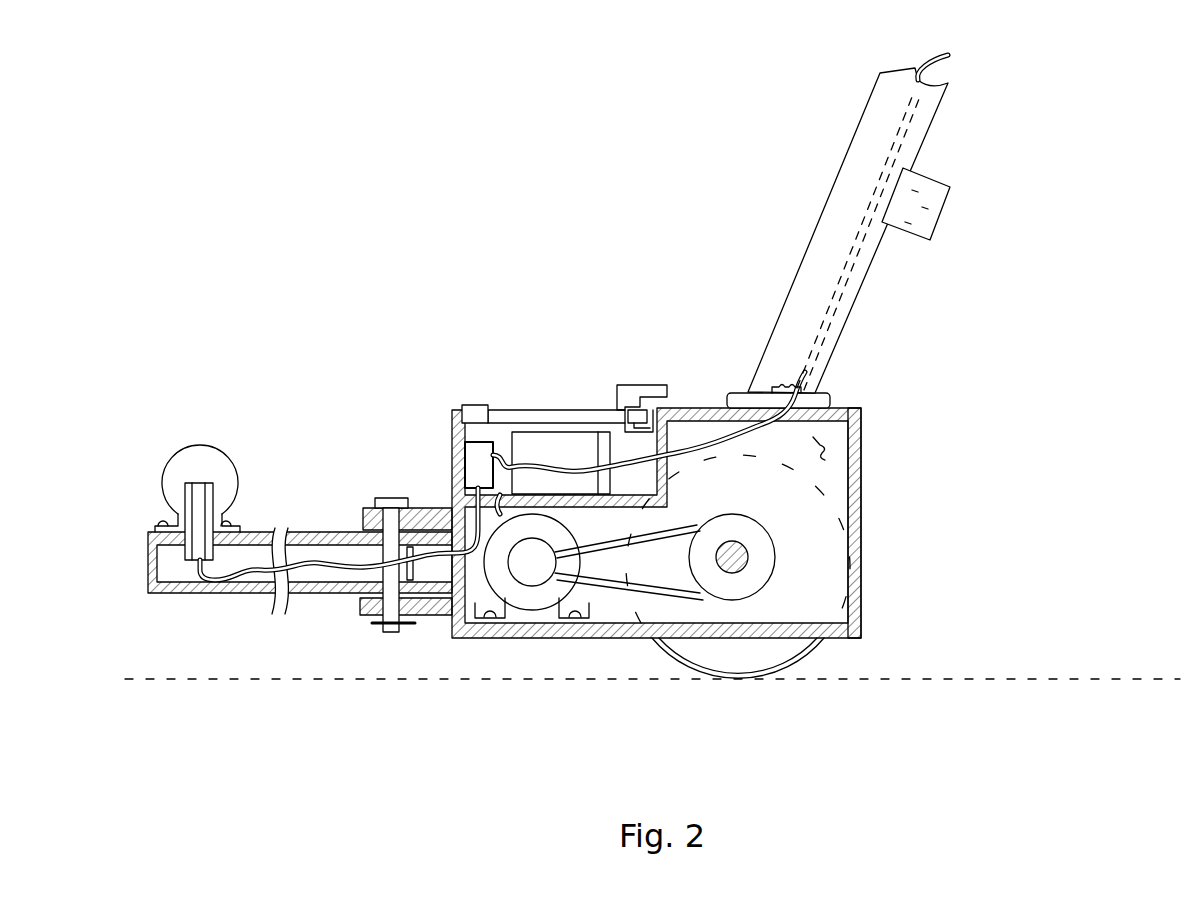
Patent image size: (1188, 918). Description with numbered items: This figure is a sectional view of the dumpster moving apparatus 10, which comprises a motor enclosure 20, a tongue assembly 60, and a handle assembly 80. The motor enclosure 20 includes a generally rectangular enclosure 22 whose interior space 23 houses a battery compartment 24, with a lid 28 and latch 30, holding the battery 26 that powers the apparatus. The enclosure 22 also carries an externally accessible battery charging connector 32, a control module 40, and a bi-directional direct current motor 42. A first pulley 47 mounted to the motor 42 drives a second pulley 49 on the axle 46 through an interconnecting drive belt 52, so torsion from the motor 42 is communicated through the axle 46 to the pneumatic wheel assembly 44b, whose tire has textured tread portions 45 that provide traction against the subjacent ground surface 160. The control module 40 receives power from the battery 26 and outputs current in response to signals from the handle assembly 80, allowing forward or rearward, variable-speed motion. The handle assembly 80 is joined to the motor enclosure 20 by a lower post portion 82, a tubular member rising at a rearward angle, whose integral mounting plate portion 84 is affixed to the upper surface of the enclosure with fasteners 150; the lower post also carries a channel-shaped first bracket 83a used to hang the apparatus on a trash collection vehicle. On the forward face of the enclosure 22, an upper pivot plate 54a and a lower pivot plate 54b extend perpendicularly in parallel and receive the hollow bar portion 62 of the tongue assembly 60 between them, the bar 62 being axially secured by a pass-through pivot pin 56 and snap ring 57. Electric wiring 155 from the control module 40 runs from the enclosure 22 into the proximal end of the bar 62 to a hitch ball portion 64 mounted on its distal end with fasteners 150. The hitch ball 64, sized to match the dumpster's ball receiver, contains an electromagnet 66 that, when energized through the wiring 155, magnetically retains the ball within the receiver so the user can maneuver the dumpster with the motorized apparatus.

The dumpster moving apparatus 10 is at (407, 255).
The motor enclosure 20 is at (683, 462).
The enclosure 22 is at (862, 470).
The interior space 23 is at (830, 445).
The battery compartment 24 is at (598, 493).
The battery 26 is at (541, 443).
The lid 28 is at (565, 410).
The latch 30 is at (647, 390).
The battery charging connector 32 is at (475, 405).
The control module 40 is at (473, 460).
The bi-directional direct current (DC) motor 42 is at (507, 637).
The pneumatic wheel assembly 44b is at (773, 650).
The textured tread portions 45 is at (818, 645).
The axle 46 is at (750, 553).
The first pulley 47 is at (530, 587).
The second pulley 49 is at (840, 528).
The drive belt 52 is at (607, 545).
The upper pivot plate 54a is at (390, 523).
The lower pivot plate 54b is at (358, 605).
The pivot pin 56 is at (398, 500).
The snap ring 57 is at (373, 623).
The tongue assembly 60 is at (268, 642).
The bar portion 62 is at (250, 590).
The hitch ball portion 64 is at (207, 447).
The electromagnet 66 is at (197, 502).
The handle assembly 80 is at (905, 219).
The lower post portion 82 is at (922, 123).
The first bracket 83a is at (933, 210).
The mounting plate portion 84 is at (828, 393).
The fasteners 150 is at (157, 522).
The electric wiring 155 is at (920, 102).
The ground surface 160 is at (1025, 675).